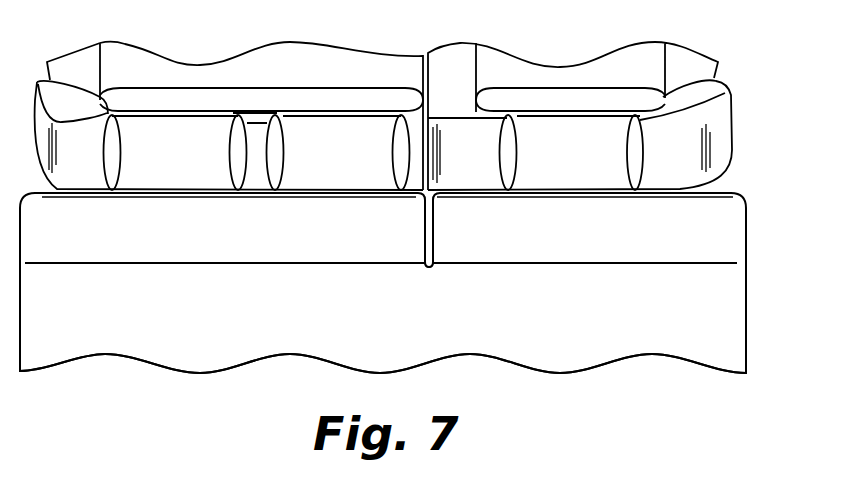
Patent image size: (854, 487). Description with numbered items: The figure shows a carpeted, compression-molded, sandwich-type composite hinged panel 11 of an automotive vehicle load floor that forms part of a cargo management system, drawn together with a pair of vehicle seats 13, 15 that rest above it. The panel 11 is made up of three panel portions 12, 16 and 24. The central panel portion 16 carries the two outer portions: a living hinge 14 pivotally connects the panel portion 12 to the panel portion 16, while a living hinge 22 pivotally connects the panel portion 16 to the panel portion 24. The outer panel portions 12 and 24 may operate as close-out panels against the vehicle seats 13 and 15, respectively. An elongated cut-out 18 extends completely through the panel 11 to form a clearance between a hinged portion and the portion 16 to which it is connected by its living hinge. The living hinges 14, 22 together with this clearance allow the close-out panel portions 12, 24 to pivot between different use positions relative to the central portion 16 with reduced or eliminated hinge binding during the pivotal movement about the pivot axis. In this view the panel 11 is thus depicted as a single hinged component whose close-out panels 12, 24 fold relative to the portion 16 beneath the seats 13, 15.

The hinged panel 11 is at (750, 312).
The panel portion 12 is at (700, 192).
The vehicle seat 13 is at (582, 168).
The living hinge 14 is at (677, 263).
The vehicle seat 15 is at (347, 168).
The panel portion 16 is at (610, 340).
The elongated cut-out 18 is at (431, 232).
The living hinge 22 is at (220, 263).
The panel portion 24 is at (248, 228).